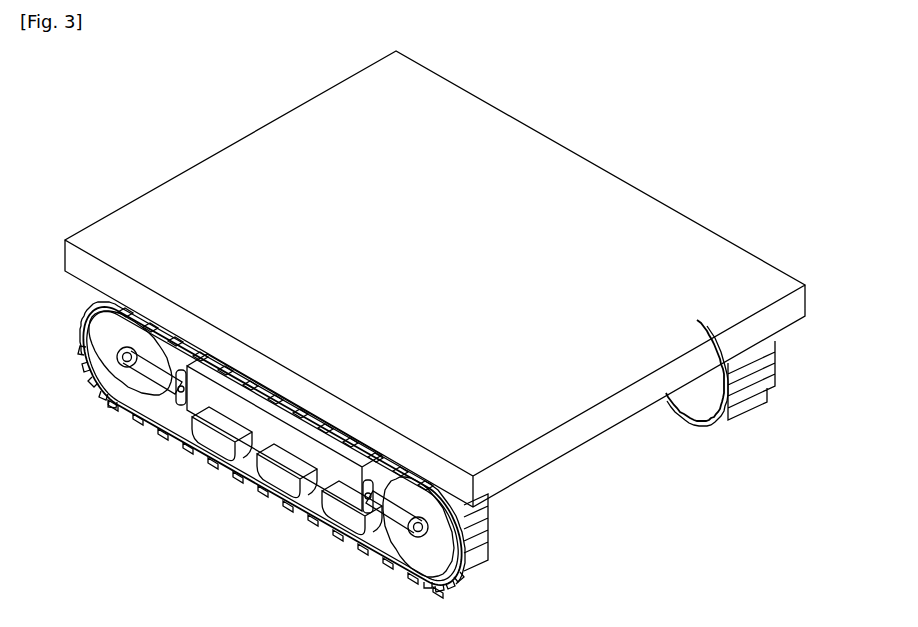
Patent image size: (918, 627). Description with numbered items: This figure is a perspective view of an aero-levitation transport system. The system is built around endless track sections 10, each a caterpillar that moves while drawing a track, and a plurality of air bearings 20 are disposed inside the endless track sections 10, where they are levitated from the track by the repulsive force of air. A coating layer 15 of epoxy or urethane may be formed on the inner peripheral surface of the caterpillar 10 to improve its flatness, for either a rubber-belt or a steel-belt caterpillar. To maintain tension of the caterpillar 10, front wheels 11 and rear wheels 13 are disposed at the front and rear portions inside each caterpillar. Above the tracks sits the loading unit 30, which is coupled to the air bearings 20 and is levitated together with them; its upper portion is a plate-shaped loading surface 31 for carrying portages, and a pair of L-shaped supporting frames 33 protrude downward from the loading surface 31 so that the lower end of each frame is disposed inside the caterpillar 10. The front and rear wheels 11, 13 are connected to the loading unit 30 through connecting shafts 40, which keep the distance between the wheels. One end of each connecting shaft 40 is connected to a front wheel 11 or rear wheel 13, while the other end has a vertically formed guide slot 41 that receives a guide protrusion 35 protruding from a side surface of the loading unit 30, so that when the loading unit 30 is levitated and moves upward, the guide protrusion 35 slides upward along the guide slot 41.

The endless track section 10 is at (422, 460).
The front wheel 11 is at (413, 553).
The rear wheel 13 is at (112, 375).
The coating layer 15 is at (235, 462).
The air bearing 20 is at (183, 457).
The loading unit 30 is at (435, 298).
The loading surface 31 is at (708, 253).
The supporting frame 33 is at (287, 450).
The guide protrusion 35 is at (113, 402).
The connecting shaft 40 is at (84, 335).
The guide slot 41 is at (170, 396).